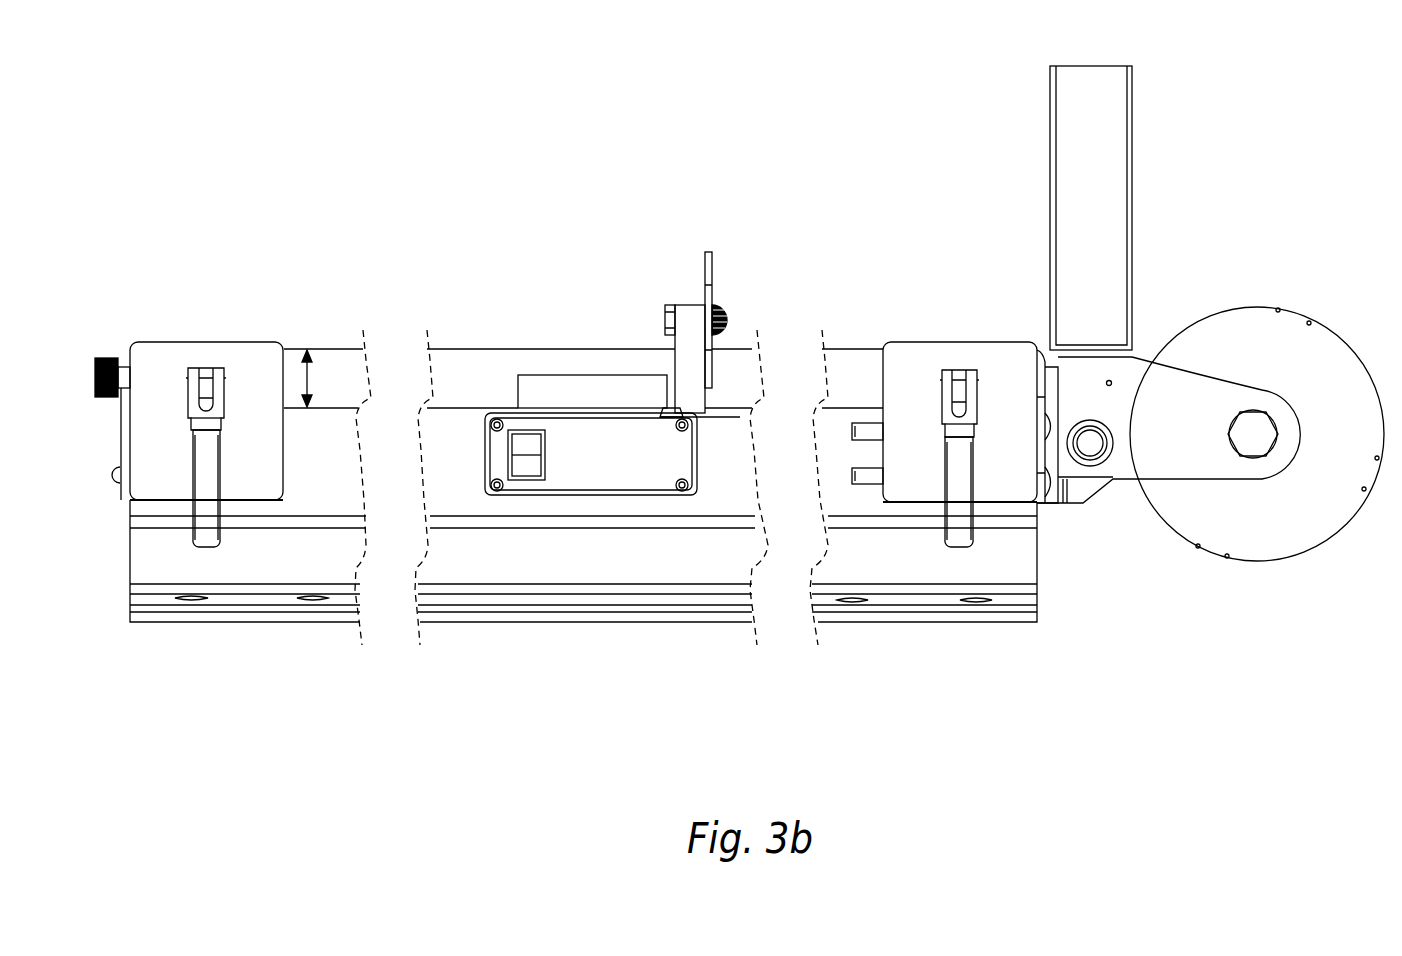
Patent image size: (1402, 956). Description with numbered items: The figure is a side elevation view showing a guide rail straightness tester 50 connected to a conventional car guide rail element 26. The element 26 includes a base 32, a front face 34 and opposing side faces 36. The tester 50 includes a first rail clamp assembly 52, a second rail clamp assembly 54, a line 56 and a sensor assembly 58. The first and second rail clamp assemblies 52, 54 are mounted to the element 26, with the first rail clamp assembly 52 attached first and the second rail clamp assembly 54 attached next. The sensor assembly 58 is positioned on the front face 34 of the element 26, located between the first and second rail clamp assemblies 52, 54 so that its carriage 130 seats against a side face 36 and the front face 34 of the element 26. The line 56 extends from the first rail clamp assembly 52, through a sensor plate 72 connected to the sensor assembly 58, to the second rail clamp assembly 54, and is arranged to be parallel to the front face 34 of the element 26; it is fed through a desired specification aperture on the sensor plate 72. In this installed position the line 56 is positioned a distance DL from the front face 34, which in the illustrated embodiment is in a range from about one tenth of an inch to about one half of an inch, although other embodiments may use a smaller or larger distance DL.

The guide rail straightness tester 50 is at (399, 74).
The first rail clamp assembly 52 is at (228, 340).
The second rail clamp assembly 54 is at (1000, 340).
The line 56 is at (489, 346).
The carriage 130 is at (517, 395).
The sensor assembly 58 is at (657, 318).
The sensor plate 72 is at (712, 258).
The front face 34 is at (738, 412).
The element 26 is at (1037, 572).
The base 32 is at (207, 623).
The side faces 36 is at (334, 478).
The distance DL is at (326, 378).